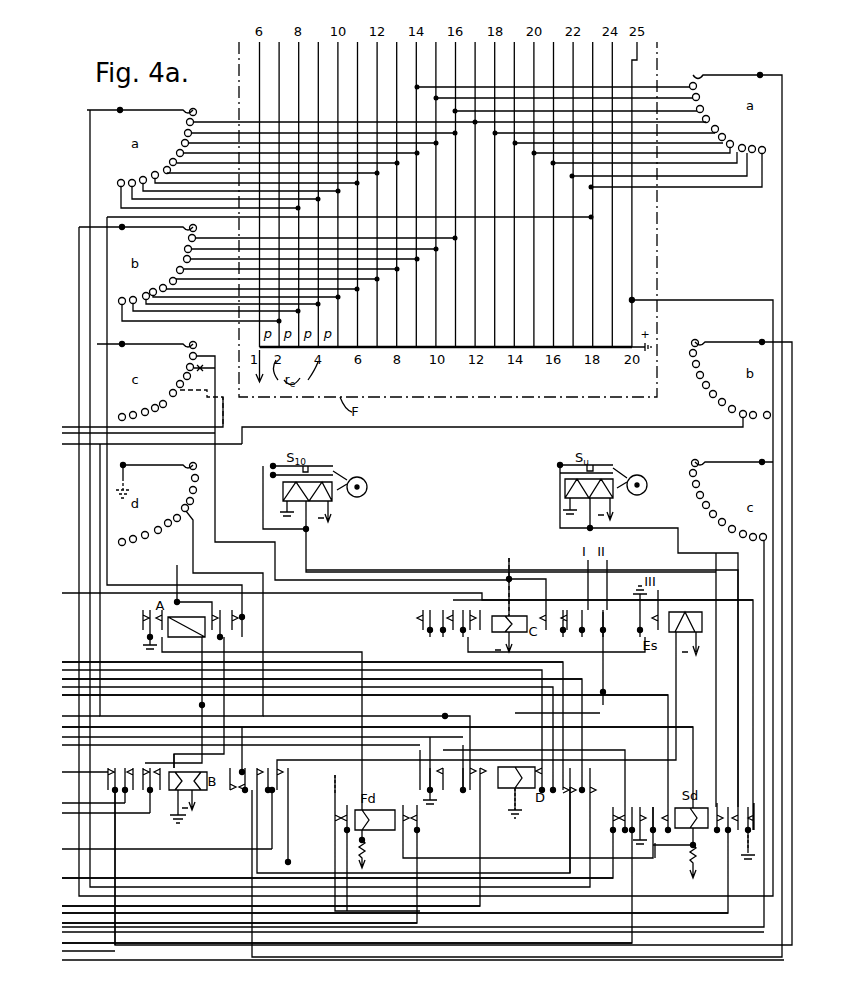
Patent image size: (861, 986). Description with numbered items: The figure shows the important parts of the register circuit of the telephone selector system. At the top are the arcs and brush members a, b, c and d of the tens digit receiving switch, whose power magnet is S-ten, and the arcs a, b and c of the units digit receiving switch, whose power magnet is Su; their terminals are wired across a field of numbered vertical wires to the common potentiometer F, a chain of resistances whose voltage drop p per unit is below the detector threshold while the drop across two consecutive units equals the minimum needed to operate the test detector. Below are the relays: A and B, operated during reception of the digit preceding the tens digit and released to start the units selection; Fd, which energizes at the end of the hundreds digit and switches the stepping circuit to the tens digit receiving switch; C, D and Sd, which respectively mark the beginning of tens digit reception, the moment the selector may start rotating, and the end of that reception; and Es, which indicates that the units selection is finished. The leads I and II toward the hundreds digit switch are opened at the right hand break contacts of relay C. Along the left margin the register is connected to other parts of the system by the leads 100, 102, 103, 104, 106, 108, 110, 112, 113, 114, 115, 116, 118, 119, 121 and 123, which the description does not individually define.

The conductor 100 is at (125, 416).
The conductor 102 is at (135, 444).
The conductor 103 is at (390, 593).
The conductor 104 is at (295, 662).
The conductor 106 is at (305, 679).
The conductor 108 is at (348, 695).
The conductor 110 is at (360, 727).
The conductor 112 is at (224, 745).
The conductor 113 is at (68, 772).
The conductor 114 is at (76, 803).
The conductor 115 is at (89, 814).
The conductor 116 is at (150, 849).
The conductor 118 is at (320, 878).
The conductor 119 is at (254, 906).
The conductor 121 is at (222, 923).
The conductor 123 is at (330, 943).